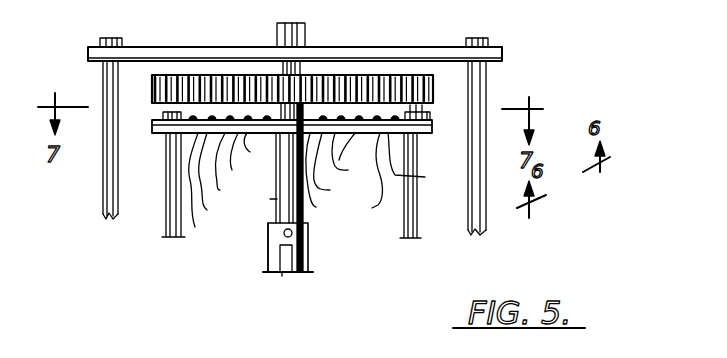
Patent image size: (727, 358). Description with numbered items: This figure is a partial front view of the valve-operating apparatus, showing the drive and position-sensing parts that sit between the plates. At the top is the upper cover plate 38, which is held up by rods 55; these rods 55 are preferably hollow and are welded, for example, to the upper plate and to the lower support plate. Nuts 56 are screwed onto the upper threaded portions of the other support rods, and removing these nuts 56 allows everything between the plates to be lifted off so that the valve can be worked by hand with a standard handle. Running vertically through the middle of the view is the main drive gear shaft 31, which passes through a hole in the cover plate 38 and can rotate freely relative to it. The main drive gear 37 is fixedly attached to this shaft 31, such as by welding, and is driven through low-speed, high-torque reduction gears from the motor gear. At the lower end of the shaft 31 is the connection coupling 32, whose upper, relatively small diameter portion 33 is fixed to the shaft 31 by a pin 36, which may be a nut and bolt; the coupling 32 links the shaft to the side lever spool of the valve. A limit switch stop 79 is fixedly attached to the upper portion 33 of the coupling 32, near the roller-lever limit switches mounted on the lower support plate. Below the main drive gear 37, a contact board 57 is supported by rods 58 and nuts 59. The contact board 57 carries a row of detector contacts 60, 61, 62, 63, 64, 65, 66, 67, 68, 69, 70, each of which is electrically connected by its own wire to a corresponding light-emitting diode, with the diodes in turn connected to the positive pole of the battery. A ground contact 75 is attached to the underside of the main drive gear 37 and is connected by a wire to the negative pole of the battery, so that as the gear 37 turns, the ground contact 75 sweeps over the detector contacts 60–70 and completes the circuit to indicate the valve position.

The main drive gear shaft 31 is at (310, 223).
The connection coupling 32 is at (268, 250).
The upper, relatively small diameter portion 33 is at (310, 260).
The pin 36 is at (310, 244).
The main drive gear 37 is at (433, 92).
The cover plate 38 is at (435, 46).
The rods 55 is at (106, 185).
The nuts 56 is at (113, 37).
The contact board 57 is at (152, 126).
The rods 58 is at (168, 207).
The nuts 59 is at (167, 112).
The detector contact 60 is at (419, 161).
The detector contact 61 is at (366, 177).
The detector contact 62 is at (353, 157).
The detector contact 63 is at (335, 167).
The detector contact 64 is at (323, 177).
The detector contact 65 is at (262, 201).
The detector contact 66 is at (262, 147).
The detector contact 67 is at (245, 157).
The detector contact 68 is at (231, 167).
The detector contact 69 is at (215, 177).
The detector contact 70 is at (205, 186).
The ground contact 75 is at (300, 112).
The limit switch stop 79 is at (282, 275).